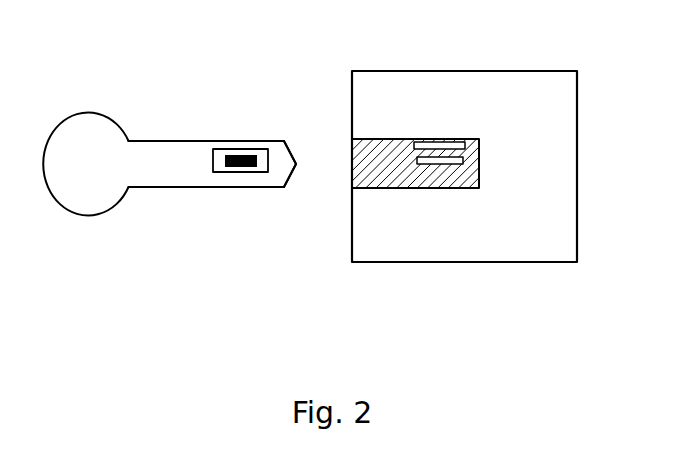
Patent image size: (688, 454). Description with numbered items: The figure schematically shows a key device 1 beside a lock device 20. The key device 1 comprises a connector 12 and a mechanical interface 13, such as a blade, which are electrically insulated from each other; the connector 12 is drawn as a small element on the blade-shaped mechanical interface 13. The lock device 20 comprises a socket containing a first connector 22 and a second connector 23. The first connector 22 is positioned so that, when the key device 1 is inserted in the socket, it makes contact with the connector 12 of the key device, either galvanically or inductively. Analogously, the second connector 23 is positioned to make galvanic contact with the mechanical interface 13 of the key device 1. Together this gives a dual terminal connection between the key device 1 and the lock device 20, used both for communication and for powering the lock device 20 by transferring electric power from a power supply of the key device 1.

The key device 1 is at (77, 175).
The mechanical interface 13 is at (172, 152).
The connector 12 is at (235, 150).
The lock device 20 is at (474, 100).
The first connector 22 is at (460, 160).
The second connector 23 is at (462, 143).